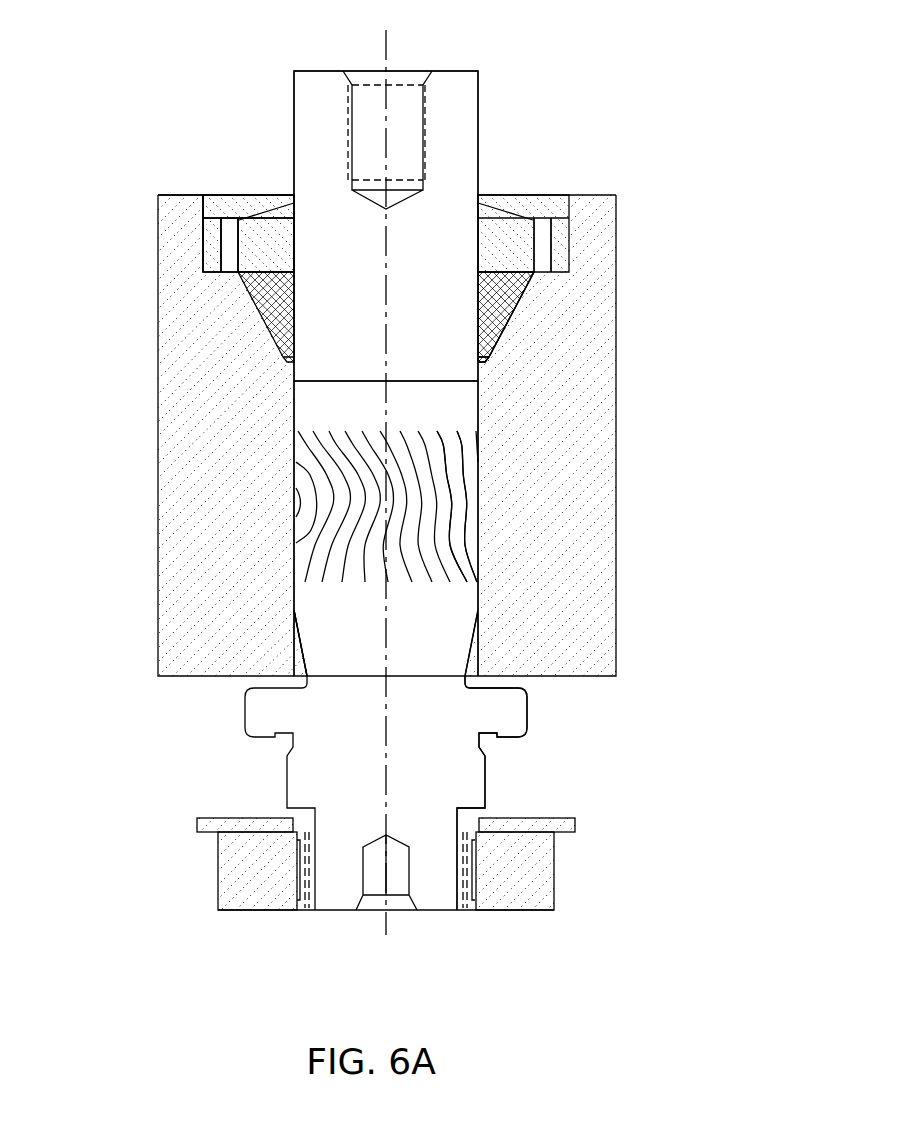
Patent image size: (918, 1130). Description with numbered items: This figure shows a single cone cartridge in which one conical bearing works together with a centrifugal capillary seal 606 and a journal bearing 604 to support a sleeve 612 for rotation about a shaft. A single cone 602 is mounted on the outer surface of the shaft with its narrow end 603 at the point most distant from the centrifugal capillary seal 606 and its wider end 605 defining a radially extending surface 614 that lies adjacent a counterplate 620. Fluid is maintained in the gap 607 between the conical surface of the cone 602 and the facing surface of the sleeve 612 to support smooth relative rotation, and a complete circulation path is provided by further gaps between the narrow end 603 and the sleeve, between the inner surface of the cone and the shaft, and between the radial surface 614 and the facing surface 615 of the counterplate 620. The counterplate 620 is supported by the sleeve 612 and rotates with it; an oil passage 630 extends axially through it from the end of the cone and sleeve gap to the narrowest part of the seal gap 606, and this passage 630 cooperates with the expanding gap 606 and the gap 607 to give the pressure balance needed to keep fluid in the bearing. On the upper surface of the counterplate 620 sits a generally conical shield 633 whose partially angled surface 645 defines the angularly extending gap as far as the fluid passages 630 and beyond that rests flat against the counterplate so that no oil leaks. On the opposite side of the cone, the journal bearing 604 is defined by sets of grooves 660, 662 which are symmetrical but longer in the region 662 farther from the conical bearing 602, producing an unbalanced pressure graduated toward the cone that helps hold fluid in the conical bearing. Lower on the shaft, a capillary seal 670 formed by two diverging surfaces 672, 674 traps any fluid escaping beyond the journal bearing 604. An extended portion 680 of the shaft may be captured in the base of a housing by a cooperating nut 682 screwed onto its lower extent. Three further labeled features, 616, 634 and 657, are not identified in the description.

The cone 602 is at (517, 300).
The narrow end of the cone 603 is at (490, 357).
The journal bearing 604 is at (480, 597).
The wider end of the cone 605 is at (507, 287).
The centrifugal capillary seal 606 is at (283, 213).
The gap 607 is at (262, 287).
The sleeve 612 is at (613, 483).
The radially extending surface 614 is at (453, 242).
The facing surface of the counterplate 615 is at (252, 233).
The piston 616 is at (477, 305).
The counterplate 620 is at (263, 268).
The oil passage 630 is at (202, 192).
The shield 633 is at (192, 181).
The slot 634 is at (225, 242).
The partially angled surface 645 is at (386, 226).
The seal flank 657 is at (503, 335).
The grooves 660 is at (452, 455).
The grooves 662 is at (468, 552).
The capillary seal 670 is at (298, 665).
The diverging surface 672 is at (297, 637).
The diverging surface 674 is at (306, 646).
The extended portion of the shaft 680 is at (487, 786).
The nut 682 is at (557, 870).